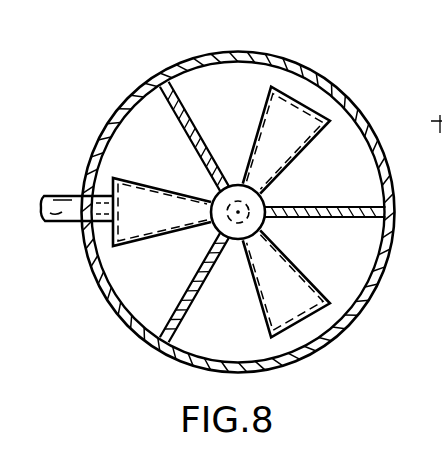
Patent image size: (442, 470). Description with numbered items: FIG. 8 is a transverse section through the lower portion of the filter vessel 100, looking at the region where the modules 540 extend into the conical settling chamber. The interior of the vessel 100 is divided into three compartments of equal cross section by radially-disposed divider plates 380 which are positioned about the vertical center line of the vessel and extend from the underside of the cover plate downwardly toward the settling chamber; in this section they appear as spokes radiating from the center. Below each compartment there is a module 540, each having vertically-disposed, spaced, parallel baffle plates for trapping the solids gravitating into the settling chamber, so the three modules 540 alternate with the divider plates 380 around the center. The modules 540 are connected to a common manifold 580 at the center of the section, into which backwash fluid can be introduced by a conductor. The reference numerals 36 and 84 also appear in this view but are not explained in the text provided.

The vessel 100 is at (381, 120).
The cylindrical housing 36 is at (380, 256).
The divider plates 380 is at (195, 138).
The common manifold 580 is at (263, 198).
The modules 540 is at (165, 240).
The shaft 84 is at (66, 226).